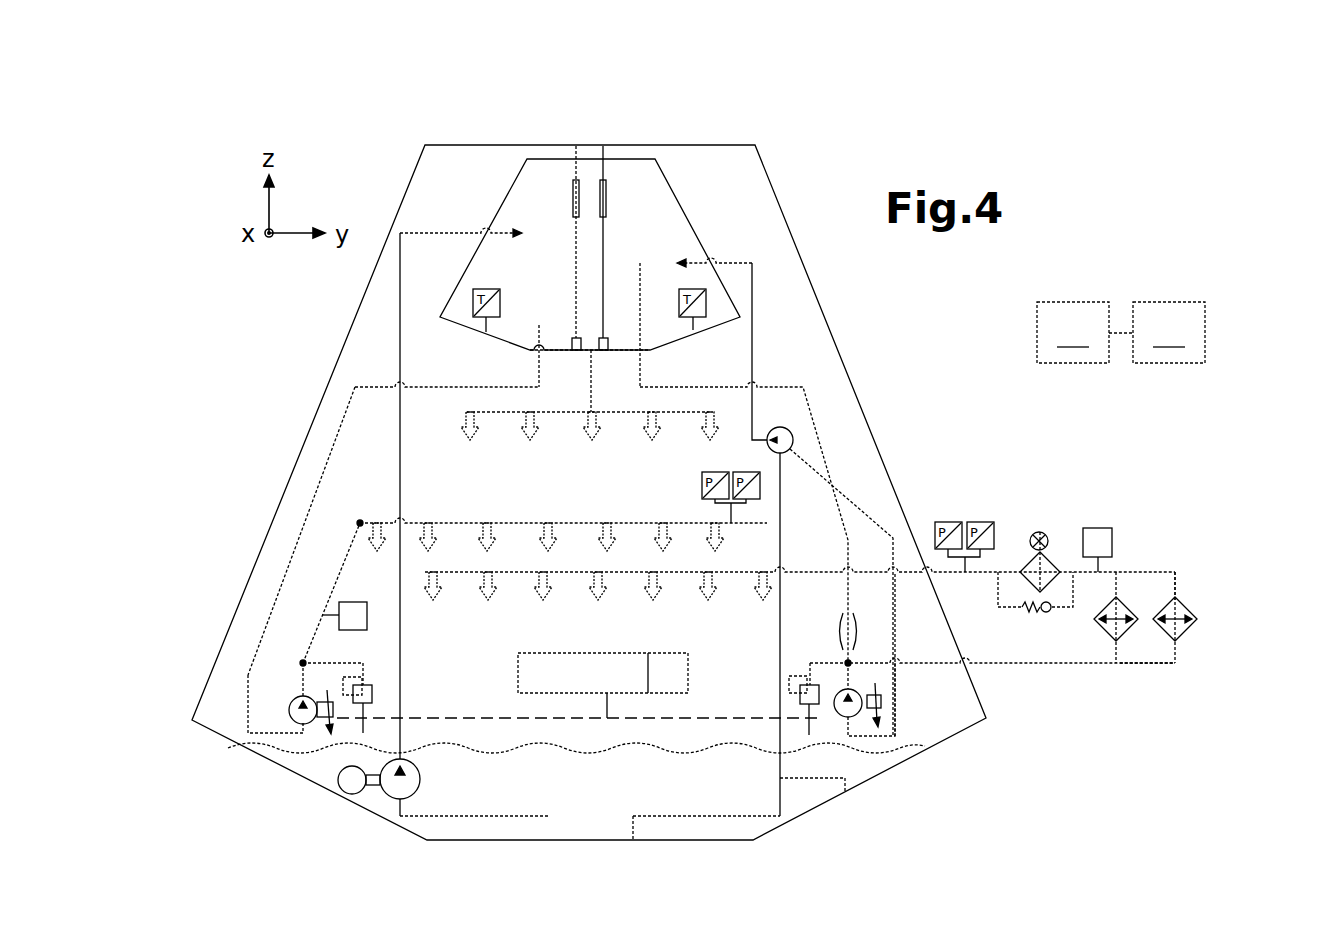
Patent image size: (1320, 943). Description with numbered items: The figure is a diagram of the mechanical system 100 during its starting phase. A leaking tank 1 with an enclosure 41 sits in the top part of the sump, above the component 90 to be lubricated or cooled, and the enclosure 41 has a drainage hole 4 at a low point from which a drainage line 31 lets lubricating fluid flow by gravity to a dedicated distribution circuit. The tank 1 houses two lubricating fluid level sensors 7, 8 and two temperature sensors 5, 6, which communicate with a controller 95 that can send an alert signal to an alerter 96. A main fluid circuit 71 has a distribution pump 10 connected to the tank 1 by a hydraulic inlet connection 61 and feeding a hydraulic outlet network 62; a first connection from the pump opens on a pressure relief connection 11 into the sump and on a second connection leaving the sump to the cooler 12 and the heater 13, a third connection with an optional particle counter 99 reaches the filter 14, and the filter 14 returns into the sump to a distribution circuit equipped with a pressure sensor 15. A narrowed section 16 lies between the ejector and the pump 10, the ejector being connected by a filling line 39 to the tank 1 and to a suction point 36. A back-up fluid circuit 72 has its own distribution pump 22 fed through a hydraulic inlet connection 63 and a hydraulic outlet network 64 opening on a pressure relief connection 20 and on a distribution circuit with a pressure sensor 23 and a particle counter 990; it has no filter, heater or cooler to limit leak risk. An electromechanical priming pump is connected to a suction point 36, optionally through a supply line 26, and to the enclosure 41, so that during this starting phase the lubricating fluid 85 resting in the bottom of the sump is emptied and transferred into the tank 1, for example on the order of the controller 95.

The tank 1 is at (527, 158).
The enclosure 41 is at (495, 210).
The lubricating fluid level sensor 7 is at (576, 143).
The lubricating fluid level sensor 8 is at (603, 143).
The filling line 39 is at (400, 335).
The temperature sensor 6 is at (473, 303).
The temperature sensor 5 is at (707, 303).
The drainage hole 4 is at (591, 350).
The drainage line 31 is at (590, 390).
The pressure sensor 23 is at (702, 482).
The hydraulic inlet connection 61 is at (845, 455).
The narrowed section 16 is at (843, 633).
The pressure sensor 15 is at (990, 522).
The filter 14 is at (1038, 533).
The particle counter 99 is at (1103, 528).
The heater 13 is at (1102, 632).
The cooler 12 is at (1188, 603).
The hydraulic outlet network 62 is at (1192, 580).
The main fluid circuit 71 is at (1182, 673).
The mechanical system 100 is at (960, 747).
The distribution pump 10 is at (840, 717).
The pressure relief connection 11 is at (798, 700).
The component 90 is at (668, 653).
The particle counter 990 is at (367, 607).
The pressure relief connection 20 is at (373, 690).
The distribution pump 22 is at (290, 708).
The hydraulic inlet connection 63 is at (292, 558).
The hydraulic outlet network 64 is at (368, 510).
The back-up fluid circuit 72 is at (262, 609).
The suction point 36 is at (545, 816).
The supply line 26 is at (657, 816).
The lubricating fluid 85 is at (810, 793).
The controller 95 is at (1073, 332).
The alerter 96 is at (1169, 332).